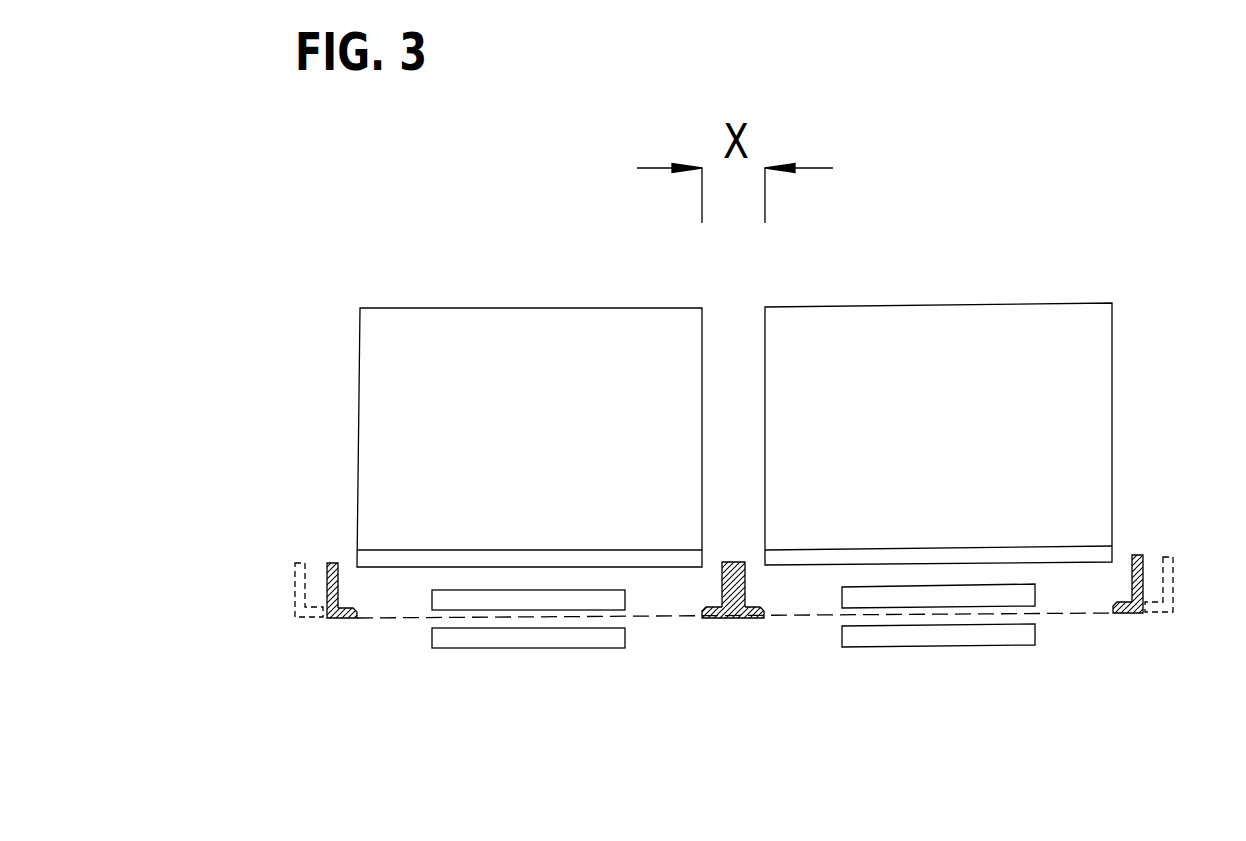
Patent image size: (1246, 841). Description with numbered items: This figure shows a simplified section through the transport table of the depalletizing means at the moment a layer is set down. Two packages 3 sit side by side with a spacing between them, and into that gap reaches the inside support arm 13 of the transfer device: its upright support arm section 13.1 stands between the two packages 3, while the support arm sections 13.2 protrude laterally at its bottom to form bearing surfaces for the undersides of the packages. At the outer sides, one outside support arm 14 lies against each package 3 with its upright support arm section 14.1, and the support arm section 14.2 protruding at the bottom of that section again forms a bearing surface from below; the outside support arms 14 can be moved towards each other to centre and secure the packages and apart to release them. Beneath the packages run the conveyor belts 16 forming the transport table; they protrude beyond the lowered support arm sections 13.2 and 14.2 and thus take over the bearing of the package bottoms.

The package 3 is at (543, 430).
The inside support arm 13 is at (743, 622).
The support arm section 13.1 is at (743, 563).
The support arm section 13.2 is at (705, 617).
The outside support arm 14 is at (744, 599).
The support arm section 14.1 is at (332, 582).
The support arm section 14.2 is at (352, 618).
The conveyor belt 16 is at (538, 600).